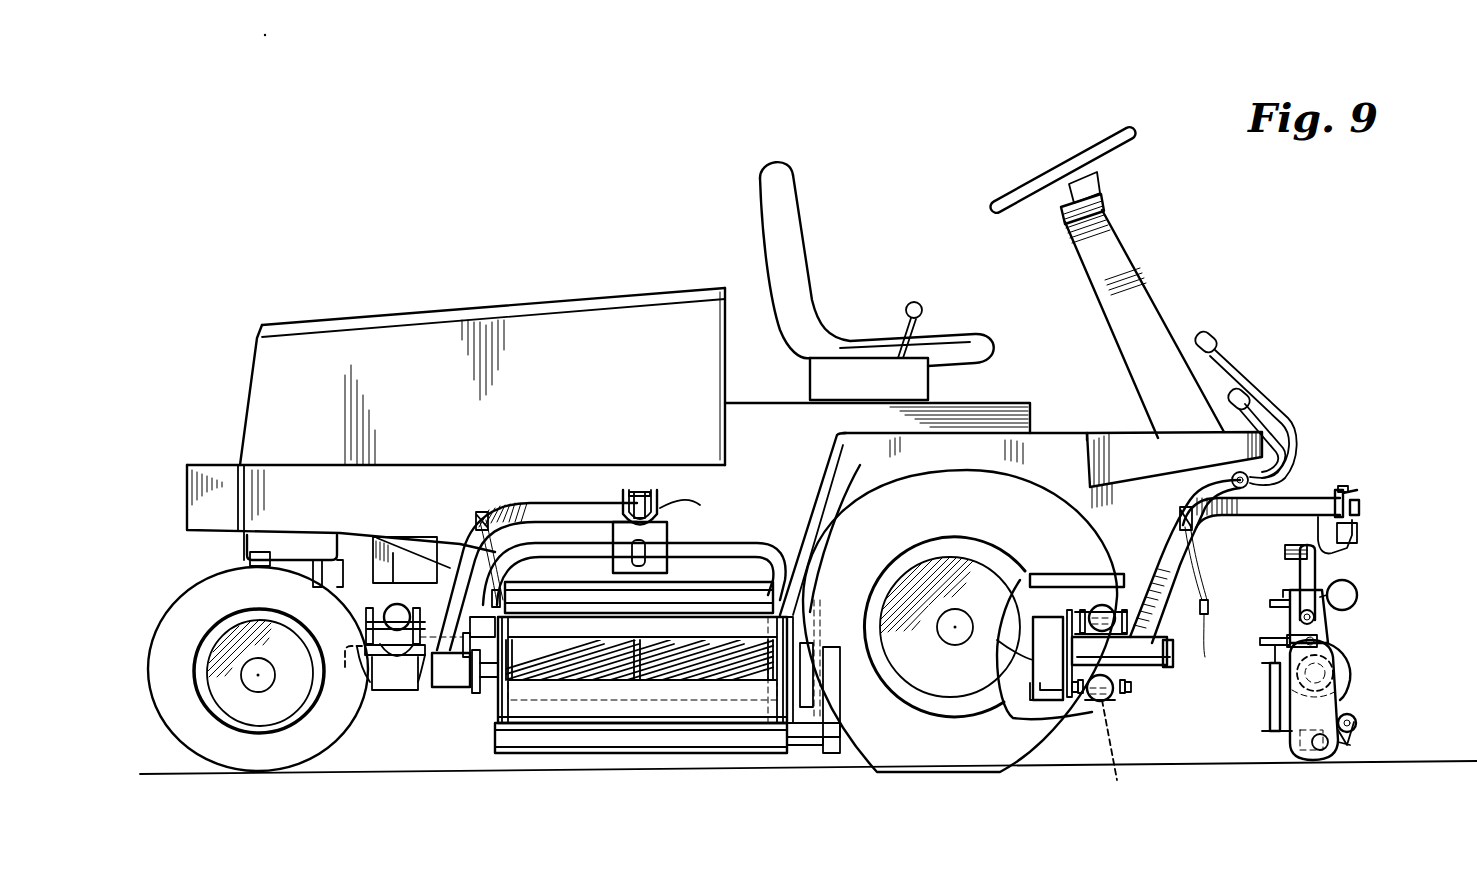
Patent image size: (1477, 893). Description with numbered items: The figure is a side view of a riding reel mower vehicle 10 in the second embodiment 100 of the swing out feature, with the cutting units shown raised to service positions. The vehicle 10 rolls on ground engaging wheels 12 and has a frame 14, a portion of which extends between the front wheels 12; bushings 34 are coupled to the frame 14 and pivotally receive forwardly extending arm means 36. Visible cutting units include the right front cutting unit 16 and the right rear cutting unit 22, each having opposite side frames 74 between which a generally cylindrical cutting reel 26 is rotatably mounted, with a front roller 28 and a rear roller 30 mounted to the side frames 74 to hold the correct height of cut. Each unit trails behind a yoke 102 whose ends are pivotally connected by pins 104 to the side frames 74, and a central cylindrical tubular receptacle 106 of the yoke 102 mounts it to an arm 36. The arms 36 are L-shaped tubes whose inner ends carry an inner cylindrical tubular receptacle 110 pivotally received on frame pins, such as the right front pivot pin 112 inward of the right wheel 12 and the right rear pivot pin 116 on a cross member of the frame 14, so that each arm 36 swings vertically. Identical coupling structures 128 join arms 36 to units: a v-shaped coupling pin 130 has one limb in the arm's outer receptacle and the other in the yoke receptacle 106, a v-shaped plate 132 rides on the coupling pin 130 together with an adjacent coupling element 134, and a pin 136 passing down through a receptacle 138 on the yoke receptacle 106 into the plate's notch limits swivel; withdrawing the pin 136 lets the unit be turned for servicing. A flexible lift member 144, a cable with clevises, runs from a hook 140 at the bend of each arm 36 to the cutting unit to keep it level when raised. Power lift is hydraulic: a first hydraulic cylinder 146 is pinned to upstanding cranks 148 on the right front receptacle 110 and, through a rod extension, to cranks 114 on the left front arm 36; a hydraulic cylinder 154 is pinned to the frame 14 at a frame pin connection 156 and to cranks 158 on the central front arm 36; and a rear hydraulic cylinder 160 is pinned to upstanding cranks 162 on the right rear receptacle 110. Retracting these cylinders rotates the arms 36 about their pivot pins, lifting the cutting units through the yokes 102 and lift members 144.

The vehicle 10 is at (567, 180).
The ground engaging wheels 12 is at (185, 767).
The frame 14 is at (510, 465).
The right front cutting unit 16 is at (1262, 728).
The right rear cutting unit 22 is at (470, 701).
The cutting reel 26 is at (672, 680).
The front roller 28 is at (803, 565).
The rear roller 30 is at (680, 740).
The bushings 34 is at (1250, 701).
The arm means 36 is at (590, 502).
The side frames 74 is at (493, 707).
The second embodiment 100 is at (1381, 336).
The yoke 102 is at (730, 548).
The pins 104 is at (1300, 615).
The cylindrical tubular receptacle 106 is at (1285, 546).
The inner cylindrical tubular receptacle 110 is at (385, 657).
The right front pivot pin 112 is at (1168, 660).
The cranks 114 is at (1172, 665).
The right rear pivot pin 116 is at (345, 667).
The coupling structures 128 is at (683, 493).
The v-shaped coupling pin 130 is at (643, 490).
The v-shaped plate 132 is at (603, 532).
The clamp bracket 134 is at (660, 505).
The pin 136 is at (1343, 490).
The receptacle 138 is at (700, 505).
The hook 140 is at (480, 514).
The flexible lift member 144 is at (1205, 657).
The first hydraulic cylinder 146 is at (1082, 575).
The upstanding cranks 148 is at (1075, 592).
The hydraulic cylinder 154 is at (1100, 702).
The frame pin connection 156 is at (1116, 754).
The cranks 158 is at (1032, 730).
The rear hydraulic cylinder 160 is at (398, 604).
The upstanding cranks 162 is at (395, 660).